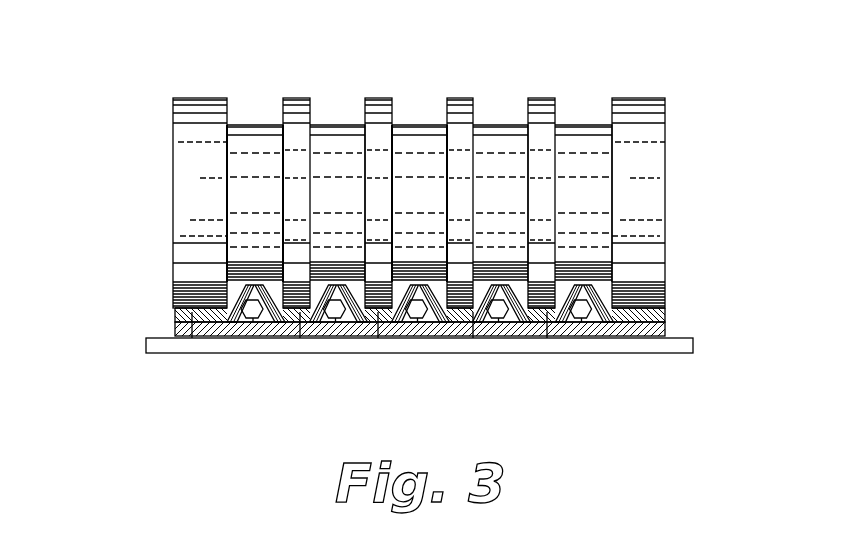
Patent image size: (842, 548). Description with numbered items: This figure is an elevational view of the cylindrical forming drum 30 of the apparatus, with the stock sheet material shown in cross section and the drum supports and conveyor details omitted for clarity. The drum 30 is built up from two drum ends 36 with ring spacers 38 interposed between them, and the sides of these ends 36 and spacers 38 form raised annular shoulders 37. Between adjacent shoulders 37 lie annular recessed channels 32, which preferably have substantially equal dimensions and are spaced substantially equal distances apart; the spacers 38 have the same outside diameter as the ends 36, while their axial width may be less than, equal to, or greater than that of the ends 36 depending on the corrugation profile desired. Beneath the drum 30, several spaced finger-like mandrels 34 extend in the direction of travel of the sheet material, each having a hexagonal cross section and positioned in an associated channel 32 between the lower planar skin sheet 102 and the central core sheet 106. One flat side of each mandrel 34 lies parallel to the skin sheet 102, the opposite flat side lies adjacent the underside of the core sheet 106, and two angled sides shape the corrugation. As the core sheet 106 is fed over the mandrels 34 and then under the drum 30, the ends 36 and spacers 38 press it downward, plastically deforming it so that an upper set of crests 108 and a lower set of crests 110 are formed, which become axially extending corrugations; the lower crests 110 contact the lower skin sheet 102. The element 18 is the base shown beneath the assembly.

The cylindrical forming drum 30 is at (148, 199).
The annular recessed channel 32 is at (333, 123).
The finger-like mandrel 34 is at (253, 323).
The drum end 36 is at (195, 97).
The raised annular shoulder 37 is at (229, 107).
The ring spacer 38 is at (297, 98).
The lower planar skin sheet 102 is at (173, 332).
The central core sheet 106 is at (665, 315).
The upper set of crests 108 is at (237, 279).
The lower set of crests 110 is at (192, 339).
The base plate 18 is at (693, 346).